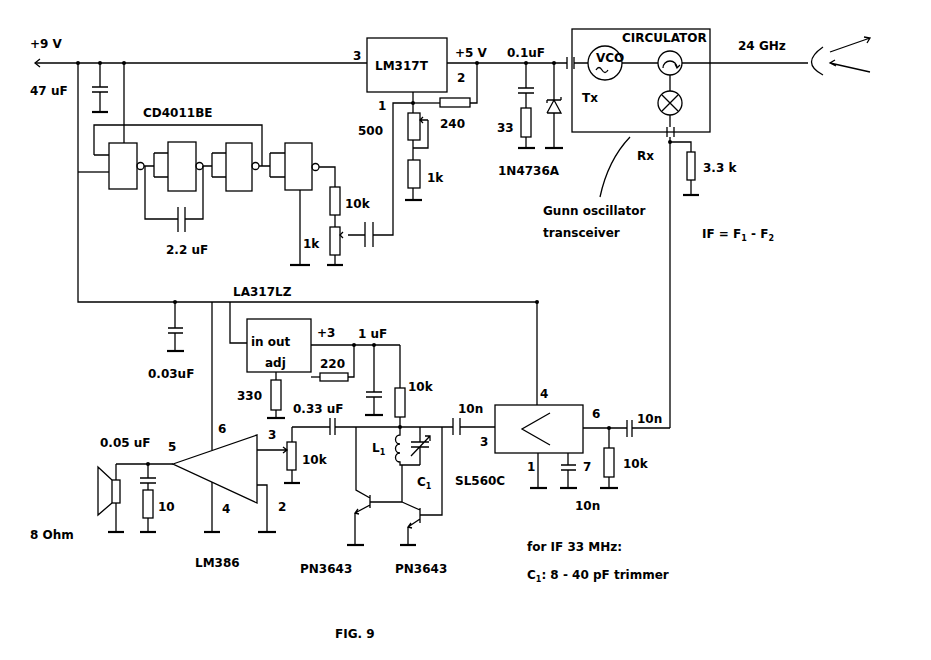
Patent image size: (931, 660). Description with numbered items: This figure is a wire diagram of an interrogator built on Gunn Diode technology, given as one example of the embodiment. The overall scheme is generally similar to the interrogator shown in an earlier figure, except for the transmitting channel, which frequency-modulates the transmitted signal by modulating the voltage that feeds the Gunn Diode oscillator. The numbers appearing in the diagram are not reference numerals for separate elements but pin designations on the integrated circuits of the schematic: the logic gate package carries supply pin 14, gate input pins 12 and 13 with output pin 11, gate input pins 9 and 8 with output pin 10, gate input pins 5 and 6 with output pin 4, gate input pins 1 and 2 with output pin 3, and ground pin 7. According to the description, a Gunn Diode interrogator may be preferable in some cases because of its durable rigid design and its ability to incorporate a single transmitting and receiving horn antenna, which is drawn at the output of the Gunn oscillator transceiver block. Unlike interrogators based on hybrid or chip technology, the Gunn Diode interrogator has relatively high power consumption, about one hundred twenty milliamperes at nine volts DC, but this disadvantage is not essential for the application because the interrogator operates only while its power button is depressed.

The CD4011BE NAND gate input pin 1 is at (298, 166).
The CD4011BE NAND gate input pin 2 is at (293, 175).
The CD4011BE NAND gate output pin 3 is at (323, 169).
The CD4011BE NAND gate output pin 4 is at (268, 170).
The CD4011BE NAND gate input pin 5 is at (239, 167).
The CD4011BE NAND gate input pin 6 is at (225, 168).
The CD4011BE ground pin 7 is at (298, 227).
The CD4011BE NAND gate input pin 8 is at (167, 168).
The CD4011BE NAND gate input pin 9 is at (182, 166).
The CD4011BE NAND gate output pin 10 is at (201, 178).
The CD4011BE NAND gate output pin 11 is at (157, 179).
The CD4011BE NAND gate input pin 12 is at (178, 157).
The CD4011BE NAND gate input pin 13 is at (103, 173).
The CD4011BE supply pin 14 is at (112, 103).